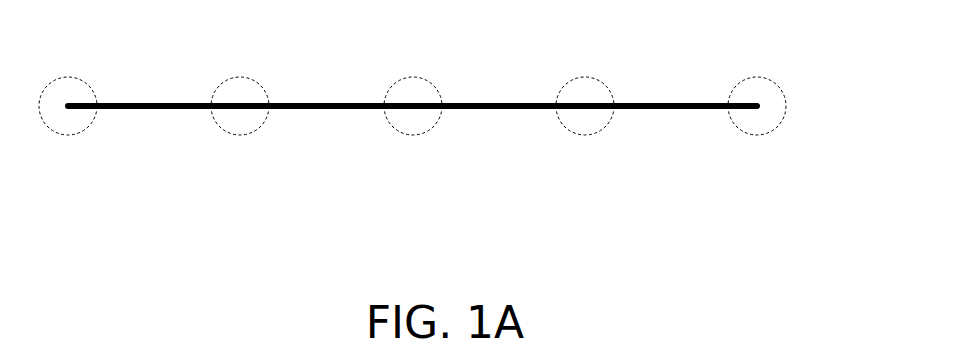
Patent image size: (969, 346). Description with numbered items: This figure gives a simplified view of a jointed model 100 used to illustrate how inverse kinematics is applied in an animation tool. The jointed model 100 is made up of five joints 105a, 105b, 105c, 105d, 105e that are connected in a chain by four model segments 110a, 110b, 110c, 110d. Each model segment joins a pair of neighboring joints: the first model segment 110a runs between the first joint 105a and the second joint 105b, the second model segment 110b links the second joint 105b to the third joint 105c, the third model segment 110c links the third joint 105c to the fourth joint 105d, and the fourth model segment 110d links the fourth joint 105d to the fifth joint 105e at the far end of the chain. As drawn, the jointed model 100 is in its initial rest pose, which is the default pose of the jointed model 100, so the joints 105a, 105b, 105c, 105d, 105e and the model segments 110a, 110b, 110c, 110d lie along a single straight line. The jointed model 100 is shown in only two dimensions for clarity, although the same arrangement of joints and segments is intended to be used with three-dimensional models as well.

The jointed model 100 is at (412, 184).
The joint 105a is at (68, 135).
The joint 105b is at (240, 135).
The joint 105c is at (413, 135).
The joint 105d is at (585, 135).
The joint 105e is at (757, 135).
The model segment 110a is at (145, 102).
The model segment 110b is at (318, 102).
The model segment 110c is at (490, 102).
The model segment 110d is at (662, 102).